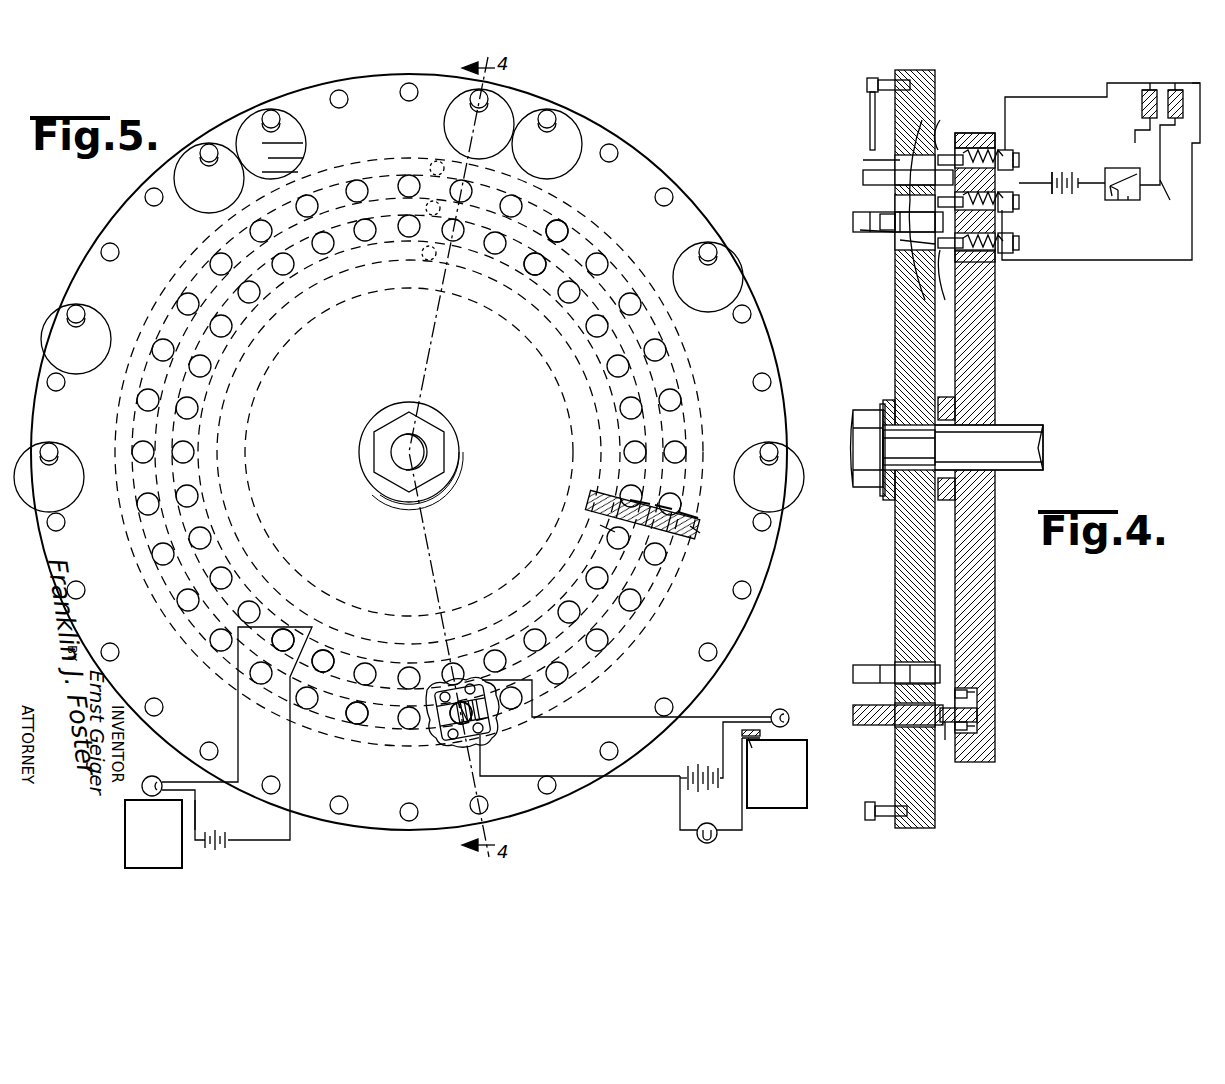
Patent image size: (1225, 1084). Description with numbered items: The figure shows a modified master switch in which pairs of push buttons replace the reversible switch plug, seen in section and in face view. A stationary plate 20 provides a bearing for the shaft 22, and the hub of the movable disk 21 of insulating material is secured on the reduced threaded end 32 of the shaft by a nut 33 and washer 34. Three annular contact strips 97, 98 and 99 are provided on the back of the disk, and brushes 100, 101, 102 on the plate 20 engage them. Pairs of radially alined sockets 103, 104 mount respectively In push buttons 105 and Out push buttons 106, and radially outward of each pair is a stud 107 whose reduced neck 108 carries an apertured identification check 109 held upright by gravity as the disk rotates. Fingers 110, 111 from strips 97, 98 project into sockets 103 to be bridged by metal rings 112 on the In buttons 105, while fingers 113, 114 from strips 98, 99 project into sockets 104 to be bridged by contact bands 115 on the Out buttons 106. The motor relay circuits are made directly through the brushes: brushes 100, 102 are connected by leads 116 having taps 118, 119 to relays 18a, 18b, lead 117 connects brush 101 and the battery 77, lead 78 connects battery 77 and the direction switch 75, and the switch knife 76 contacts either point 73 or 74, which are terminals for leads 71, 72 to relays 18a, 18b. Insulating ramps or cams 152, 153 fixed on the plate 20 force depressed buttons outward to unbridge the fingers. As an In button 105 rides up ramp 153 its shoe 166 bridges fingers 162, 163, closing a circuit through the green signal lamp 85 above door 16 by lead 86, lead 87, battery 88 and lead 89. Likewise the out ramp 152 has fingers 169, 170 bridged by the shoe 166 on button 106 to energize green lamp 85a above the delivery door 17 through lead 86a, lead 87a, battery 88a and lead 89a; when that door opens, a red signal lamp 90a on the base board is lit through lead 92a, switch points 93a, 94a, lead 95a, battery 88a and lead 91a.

In FIG. 5, the door 16 is at (153, 834).
In FIG. 5, the delivery door 17 is at (800, 792).
In FIG. 4, the relay 18a is at (1142, 112).
In FIG. 4, the relay 18b is at (1168, 112).
In FIG. 4, the stationary plate 20 is at (996, 342).
In FIG. 5, the movable disk 21 is at (409, 452).
In FIG. 4, the movable disk 21 is at (896, 344).
In FIG. 4, the shaft 22 is at (1032, 414).
In FIG. 5, the reduced threaded end 32 is at (416, 443).
In FIG. 4, the reduced threaded end 32 is at (870, 449).
In FIG. 5, the nut 33 is at (446, 442).
In FIG. 4, the nut 33 is at (857, 414).
In FIG. 5, the washer 34 is at (455, 470).
In FIG. 4, the washer 34 is at (870, 404).
In FIG. 4, the lead 71 is at (1150, 186).
In FIG. 4, the lead 72 is at (1172, 202).
In FIG. 4, the switch point 73 is at (1132, 170).
In FIG. 4, the switch point 74 is at (1136, 200).
In FIG. 4, the direction switch 75 is at (1112, 196).
In FIG. 4, the switch knife 76 is at (1122, 200).
In FIG. 4, the battery 77 is at (1055, 172).
In FIG. 4, the lead 78 is at (1074, 196).
In FIG. 5, the green signal light 85 is at (147, 778).
In FIG. 5, the green signal lamp 85a is at (777, 709).
In FIG. 5, the lead 86 is at (284, 625).
In FIG. 5, the lead 86a is at (585, 717).
In FIG. 5, the lead 87 is at (291, 782).
In FIG. 5, the lead 87a is at (722, 744).
In FIG. 5, the battery 88 is at (226, 838).
In FIG. 5, the battery 88a is at (690, 770).
In FIG. 5, the lead 89 is at (196, 806).
In FIG. 5, the lead 89a is at (618, 778).
In FIG. 5, the red signal lamp 90a is at (715, 840).
In FIG. 5, the lead 91a is at (679, 816).
In FIG. 5, the lead 92a is at (744, 822).
In FIG. 5, the switch point 93a is at (754, 744).
In FIG. 5, the switch point 94a is at (762, 733).
In FIG. 5, the lead 95a is at (706, 786).
In FIG. 5, the annular contact strip 97 is at (598, 522).
In FIG. 4, the annular contact strip 97 is at (904, 282).
In FIG. 5, the annular contact strip 98 is at (634, 554).
In FIG. 4, the annular contact strip 98 is at (936, 202).
In FIG. 5, the annular contact strip 99 is at (692, 534).
In FIG. 4, the annular contact strip 99 is at (944, 150).
In FIG. 5, the brush 100 is at (428, 260).
In FIG. 4, the brush 100 is at (960, 256).
In FIG. 5, the brush 101 is at (441, 210).
In FIG. 4, the brush 101 is at (985, 222).
In FIG. 5, the brush 102 is at (437, 161).
In FIG. 4, the brush 102 is at (958, 150).
In FIG. 5, the socket 103 is at (538, 278).
In FIG. 4, the socket 103 is at (920, 244).
In FIG. 5, the socket 104 is at (568, 230).
In FIG. 4, the socket 104 is at (900, 162).
In FIG. 5, the In push button 105 is at (288, 268).
In FIG. 4, the In push button 105 is at (853, 226).
In FIG. 5, the Out push button 106 is at (186, 298).
In FIG. 4, the Out push button 106 is at (868, 180).
In FIG. 5, the stud 107 is at (270, 112).
In FIG. 4, the stud 107 is at (880, 80).
In FIG. 4, the reduced neck 108 is at (866, 86).
In FIG. 5, the identification check 109 is at (301, 138).
In FIG. 4, the identification check 109 is at (870, 112).
In FIG. 4, the finger 110 is at (906, 256).
In FIG. 5, the finger 111 is at (636, 500).
In FIG. 4, the finger 111 is at (886, 238).
In FIG. 4, the metal ring 112 is at (880, 212).
In FIG. 5, the finger 113 is at (668, 510).
In FIG. 4, the finger 113 is at (865, 200).
In FIG. 5, the finger 114 is at (692, 522).
In FIG. 4, the finger 114 is at (938, 125).
In FIG. 4, the contact band 115 is at (868, 158).
In FIG. 4, the lead 116 is at (1010, 97).
In FIG. 4, the lead 117 is at (1040, 184).
In FIG. 4, the tap 118 is at (1142, 104).
In FIG. 4, the tap 119 is at (1195, 84).
In FIG. 5, the out ramp 152 is at (446, 712).
In FIG. 4, the out ramp 152 is at (978, 714).
In FIG. 5, the in ramp 153 is at (318, 648).
In FIG. 5, the finger 162 is at (300, 688).
In FIG. 5, the finger 163 is at (340, 660).
In FIG. 4, the shoe 166 is at (992, 243).
In FIG. 5, the finger 169 is at (437, 682).
In FIG. 4, the finger 169 is at (968, 693).
In FIG. 5, the finger 170 is at (468, 745).
In FIG. 4, the finger 170 is at (960, 742).